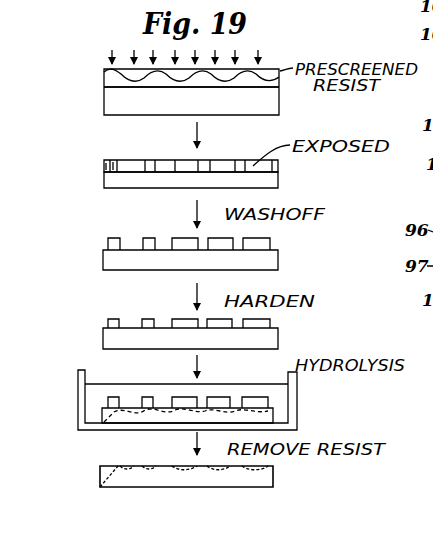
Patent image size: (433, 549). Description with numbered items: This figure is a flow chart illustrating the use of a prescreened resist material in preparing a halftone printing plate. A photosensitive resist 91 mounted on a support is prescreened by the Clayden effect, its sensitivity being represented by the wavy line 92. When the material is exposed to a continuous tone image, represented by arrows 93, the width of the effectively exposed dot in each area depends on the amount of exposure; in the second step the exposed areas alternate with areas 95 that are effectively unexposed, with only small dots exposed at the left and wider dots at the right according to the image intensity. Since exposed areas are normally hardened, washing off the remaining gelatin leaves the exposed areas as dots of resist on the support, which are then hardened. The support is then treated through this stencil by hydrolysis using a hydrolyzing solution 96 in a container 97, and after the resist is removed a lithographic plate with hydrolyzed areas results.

The photosensitive resist 91 is at (106, 77).
The wavy line 92 is at (112, 76).
The arrows 93 is at (112, 53).
The alternate areas 95 is at (106, 163).
The hydrolyzing solution 96 is at (96, 396).
The container 97 is at (81, 411).